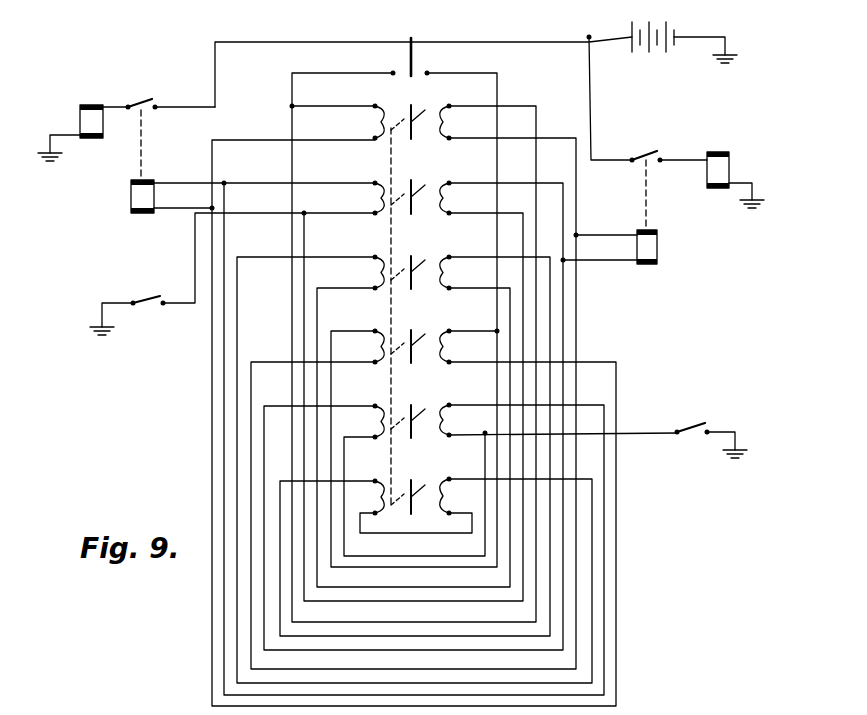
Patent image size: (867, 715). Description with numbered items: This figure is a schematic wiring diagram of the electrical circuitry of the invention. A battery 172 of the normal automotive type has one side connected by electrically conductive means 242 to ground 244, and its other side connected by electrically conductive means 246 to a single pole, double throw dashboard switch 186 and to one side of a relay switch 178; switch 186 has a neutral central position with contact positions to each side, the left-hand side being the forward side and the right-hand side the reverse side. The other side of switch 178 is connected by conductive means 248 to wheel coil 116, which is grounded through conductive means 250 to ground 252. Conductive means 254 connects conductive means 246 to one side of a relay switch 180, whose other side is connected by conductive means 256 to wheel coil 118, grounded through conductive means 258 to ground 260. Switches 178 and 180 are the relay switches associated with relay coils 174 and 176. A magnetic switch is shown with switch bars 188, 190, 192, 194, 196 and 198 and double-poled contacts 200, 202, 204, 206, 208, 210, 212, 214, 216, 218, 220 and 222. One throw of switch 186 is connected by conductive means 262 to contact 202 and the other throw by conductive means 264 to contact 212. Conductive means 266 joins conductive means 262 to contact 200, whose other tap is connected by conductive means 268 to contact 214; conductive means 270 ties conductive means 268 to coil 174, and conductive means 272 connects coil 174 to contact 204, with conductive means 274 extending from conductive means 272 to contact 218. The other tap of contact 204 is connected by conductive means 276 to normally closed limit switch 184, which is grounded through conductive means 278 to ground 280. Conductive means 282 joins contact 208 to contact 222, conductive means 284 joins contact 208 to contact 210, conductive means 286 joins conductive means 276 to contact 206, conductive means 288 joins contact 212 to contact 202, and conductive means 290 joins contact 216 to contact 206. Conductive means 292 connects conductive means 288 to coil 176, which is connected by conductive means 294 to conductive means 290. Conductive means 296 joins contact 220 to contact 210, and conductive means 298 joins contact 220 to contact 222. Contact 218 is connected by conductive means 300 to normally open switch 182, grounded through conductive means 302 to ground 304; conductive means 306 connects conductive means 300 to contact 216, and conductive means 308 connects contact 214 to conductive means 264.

The wheel coil 116 is at (80, 118).
The wheel coil 118 is at (731, 167).
The battery 172 is at (675, 33).
The relay coil 174 is at (131, 196).
The relay coil 176 is at (658, 248).
The relay switch 178 is at (148, 100).
The relay switch 180 is at (650, 152).
The normally open switch 182 is at (700, 424).
The normally closed limit switch 184 is at (148, 304).
The single pole, double throw switch 186 is at (416, 52).
The switch bar 188 is at (413, 118).
The switch bar 190 is at (413, 192).
The switch bar 192 is at (413, 266).
The switch bar 194 is at (413, 340).
The switch bar 196 is at (413, 415).
The switch bar 198 is at (413, 486).
The double-poled contact 200 is at (358, 122).
The double-poled contact 202 is at (465, 122).
The double-poled contact 204 is at (357, 198).
The double-poled contact 206 is at (466, 198).
The double-poled contact 208 is at (357, 273).
The double-poled contact 210 is at (466, 273).
The double-poled contact 212 is at (362, 347).
The double-poled contact 214 is at (466, 347).
The double-poled contact 216 is at (362, 422).
The double-poled contact 218 is at (466, 420).
The double-poled contact 220 is at (368, 497).
The double-poled contact 222 is at (461, 496).
The electrically conductive means 242 is at (716, 36).
The ground 244 is at (740, 57).
The electrically conductive means 246 is at (520, 38).
The electrically conductive means 248 is at (112, 104).
The electrically conductive means 250 is at (68, 139).
The ground 252 is at (56, 160).
The electrically conductive means 254 is at (594, 96).
The electrically conductive means 256 is at (690, 157).
The electrically conductive means 258 is at (752, 184).
The ground 260 is at (770, 207).
The electrically conductive means 262 is at (308, 74).
The electrically conductive means 264 is at (470, 74).
The electrically conductive means 266 is at (305, 108).
The electrically conductive means 268 is at (262, 141).
The electrically conductive means 270 is at (172, 210).
The electrically conductive means 272 is at (248, 182).
The electrically conductive means 274 is at (226, 242).
The electrically conductive means 276 is at (348, 214).
The electrically conductive means 278 is at (120, 303).
The ground 280 is at (112, 326).
The electrically conductive means 282 is at (313, 258).
The electrically conductive means 284 is at (317, 314).
The electrically conductive means 286 is at (304, 346).
The electrically conductive means 288 is at (572, 140).
The electrically conductive means 290 is at (565, 186).
The electrically conductive means 292 is at (612, 230).
The electrically conductive means 294 is at (610, 258).
The electrically conductive means 296 is at (375, 481).
The electrically conductive means 298 is at (420, 533).
The electrically conductive means 300 is at (640, 437).
The electrically conductive means 302 is at (740, 430).
The ground 304 is at (748, 450).
The electrically conductive means 306 is at (395, 556).
The electrically conductive means 308 is at (467, 331).